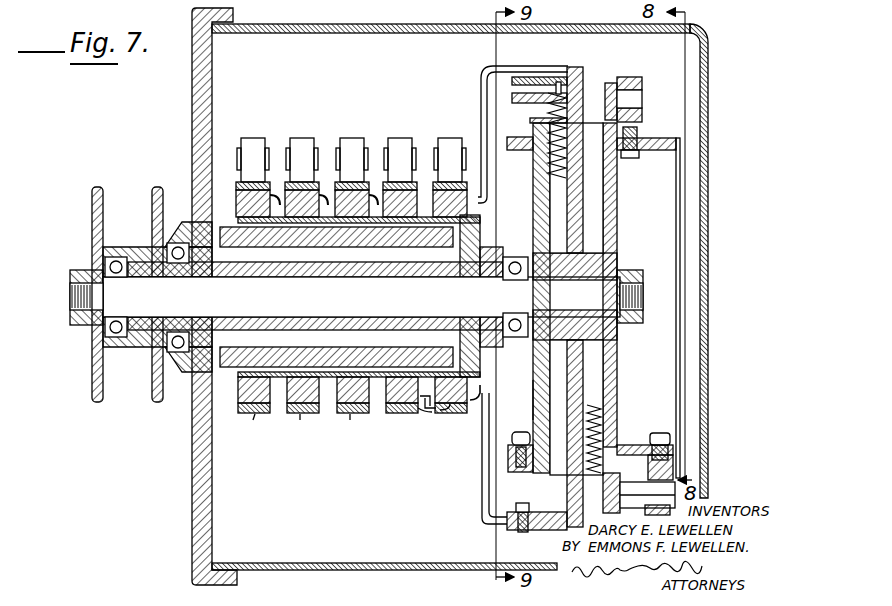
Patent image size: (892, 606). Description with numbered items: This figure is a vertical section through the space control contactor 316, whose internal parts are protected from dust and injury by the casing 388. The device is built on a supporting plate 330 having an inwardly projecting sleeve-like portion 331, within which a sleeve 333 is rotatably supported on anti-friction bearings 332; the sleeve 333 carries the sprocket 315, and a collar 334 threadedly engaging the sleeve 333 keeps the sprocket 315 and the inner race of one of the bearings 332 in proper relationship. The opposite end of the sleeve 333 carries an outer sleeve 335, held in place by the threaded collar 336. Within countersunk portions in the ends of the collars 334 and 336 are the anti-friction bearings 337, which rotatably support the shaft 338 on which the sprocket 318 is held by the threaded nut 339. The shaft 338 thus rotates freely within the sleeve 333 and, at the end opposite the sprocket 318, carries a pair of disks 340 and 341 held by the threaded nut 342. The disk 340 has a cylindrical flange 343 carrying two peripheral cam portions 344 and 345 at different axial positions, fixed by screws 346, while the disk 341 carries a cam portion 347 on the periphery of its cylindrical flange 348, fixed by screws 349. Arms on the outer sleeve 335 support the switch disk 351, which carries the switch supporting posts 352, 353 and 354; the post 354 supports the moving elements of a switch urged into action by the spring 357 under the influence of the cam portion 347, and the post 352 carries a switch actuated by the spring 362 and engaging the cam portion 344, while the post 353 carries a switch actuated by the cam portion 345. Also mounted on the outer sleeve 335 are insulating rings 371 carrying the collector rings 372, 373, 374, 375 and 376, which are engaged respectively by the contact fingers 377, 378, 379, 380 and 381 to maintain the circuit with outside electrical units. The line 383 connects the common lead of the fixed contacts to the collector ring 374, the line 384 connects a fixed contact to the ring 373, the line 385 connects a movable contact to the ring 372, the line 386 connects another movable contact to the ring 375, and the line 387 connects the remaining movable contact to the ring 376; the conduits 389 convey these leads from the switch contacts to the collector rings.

The space control contactor 316 is at (708, 90).
The sprocket 318 is at (90, 400).
The sprocket 315 is at (156, 402).
The supporting plate 330 is at (192, 105).
The sleeve-like portion 331 is at (190, 200).
The anti-friction bearings 332 is at (210, 325).
The sleeve 333 is at (288, 275).
The collar 334 is at (128, 348).
The outer sleeve 335 is at (472, 402).
The threaded collar 336 is at (488, 247).
The anti-friction bearings 337 is at (122, 280).
The shaft 338 is at (108, 303).
The threaded nut 339 is at (70, 270).
The disk 340 is at (617, 213).
The disk 341 is at (532, 376).
The threaded nut 342 is at (628, 323).
The cylindrical flange 343 is at (680, 185).
The cam portion 344 is at (673, 460).
The cam portion 345 is at (637, 128).
The screws 346 is at (630, 158).
The cam portion 347 is at (506, 472).
The cylindrical flange 348 is at (506, 456).
The screws 349 is at (518, 432).
The switch disk 351 is at (566, 78).
The switch supporting post 352 is at (583, 480).
The switch supporting post 353 is at (584, 95).
The switch supporting post 354 is at (552, 105).
The spring 357 is at (552, 160).
The spring 362 is at (604, 418).
The insulating rings 371 is at (264, 414).
The collector ring 372 is at (428, 410).
The collector ring 373 is at (418, 402).
The collector ring 374 is at (352, 415).
The collector ring 375 is at (302, 415).
The collector ring 376 is at (262, 415).
The contact finger 377 is at (450, 140).
The contact finger 378 is at (402, 140).
The contact finger 379 is at (348, 140).
The contact finger 380 is at (300, 140).
The contact finger 381 is at (246, 141).
The line 383 is at (376, 192).
The line 384 is at (420, 410).
The line 385 is at (445, 410).
The line 386 is at (326, 192).
The line 387 is at (278, 192).
The casing 388 is at (328, 24).
The conduits 389 is at (481, 72).